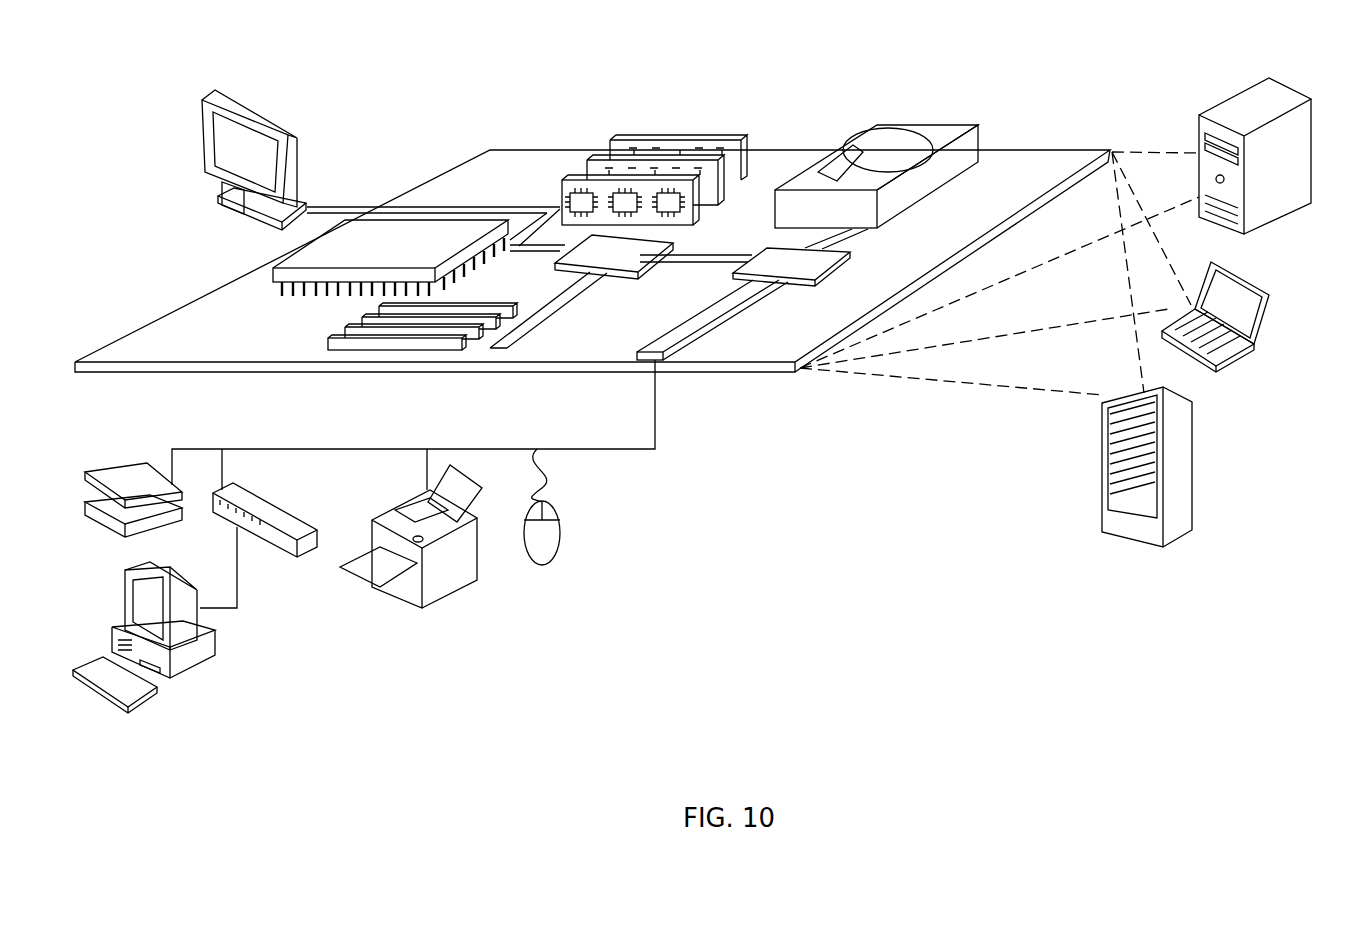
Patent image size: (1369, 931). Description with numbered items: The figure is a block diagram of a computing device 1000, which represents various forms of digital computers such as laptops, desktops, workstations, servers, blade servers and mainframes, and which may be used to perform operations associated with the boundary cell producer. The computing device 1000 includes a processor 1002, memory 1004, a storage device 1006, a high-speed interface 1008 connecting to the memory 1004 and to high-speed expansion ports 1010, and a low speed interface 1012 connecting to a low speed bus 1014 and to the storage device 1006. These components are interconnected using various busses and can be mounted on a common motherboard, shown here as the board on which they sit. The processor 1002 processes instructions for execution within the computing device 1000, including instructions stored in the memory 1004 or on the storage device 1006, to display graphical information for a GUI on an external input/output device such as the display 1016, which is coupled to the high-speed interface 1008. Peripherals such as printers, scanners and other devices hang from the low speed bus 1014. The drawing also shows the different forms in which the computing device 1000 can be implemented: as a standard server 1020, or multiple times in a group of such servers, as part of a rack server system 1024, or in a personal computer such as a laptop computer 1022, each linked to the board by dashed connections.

The computing device 1000 is at (410, 114).
The processor 1002 is at (273, 270).
The memory 1004 is at (636, 138).
The storage device 1006 is at (870, 126).
The high-speed interface 1008 is at (592, 256).
The high-speed expansion ports 1010 is at (357, 335).
The low speed interface 1012 is at (775, 252).
The low speed bus 1014 is at (665, 360).
The display 1016 is at (206, 99).
The standard server 1020 is at (1199, 128).
The laptop computer 1022 is at (1269, 296).
The rack server system 1024 is at (1103, 492).